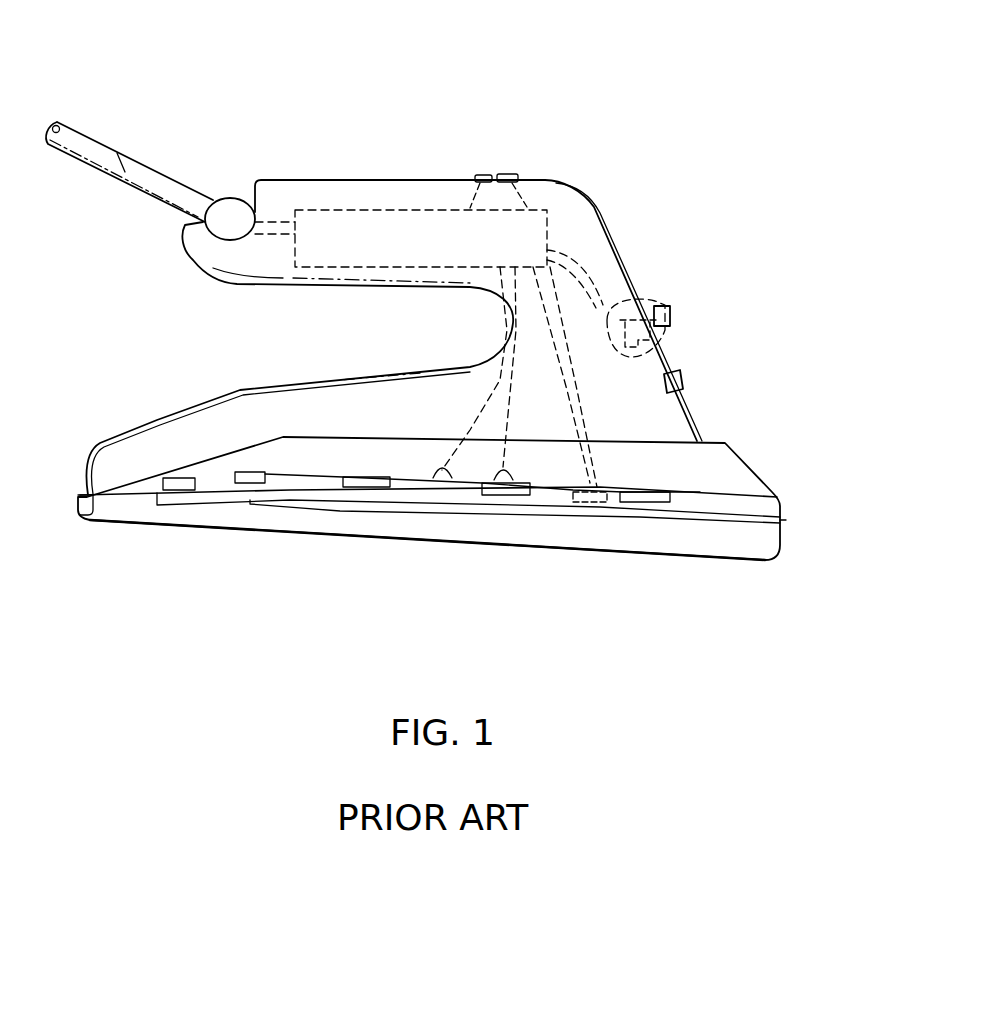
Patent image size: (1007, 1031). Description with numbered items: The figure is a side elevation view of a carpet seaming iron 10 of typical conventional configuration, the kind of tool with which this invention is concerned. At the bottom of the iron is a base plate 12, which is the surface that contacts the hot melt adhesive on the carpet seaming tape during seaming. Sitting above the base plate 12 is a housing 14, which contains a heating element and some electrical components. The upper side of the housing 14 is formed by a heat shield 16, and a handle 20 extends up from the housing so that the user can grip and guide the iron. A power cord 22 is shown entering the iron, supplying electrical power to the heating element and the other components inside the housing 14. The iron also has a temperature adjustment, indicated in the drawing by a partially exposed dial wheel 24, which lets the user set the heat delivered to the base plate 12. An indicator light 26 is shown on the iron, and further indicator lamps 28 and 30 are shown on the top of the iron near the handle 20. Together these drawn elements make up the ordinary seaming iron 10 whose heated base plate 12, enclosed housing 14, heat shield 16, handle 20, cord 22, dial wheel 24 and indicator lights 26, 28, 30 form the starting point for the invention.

The carpet seaming iron 10 is at (655, 118).
The base plate 12 is at (747, 543).
The housing 14 is at (803, 477).
The heat shield 16 is at (715, 453).
The handle 20 is at (607, 247).
The power cord 22 is at (108, 155).
The dial wheel 24 is at (657, 305).
The indicator light 26 is at (683, 372).
The indicator lamp 28 is at (508, 168).
The indicator lamp 30 is at (483, 170).